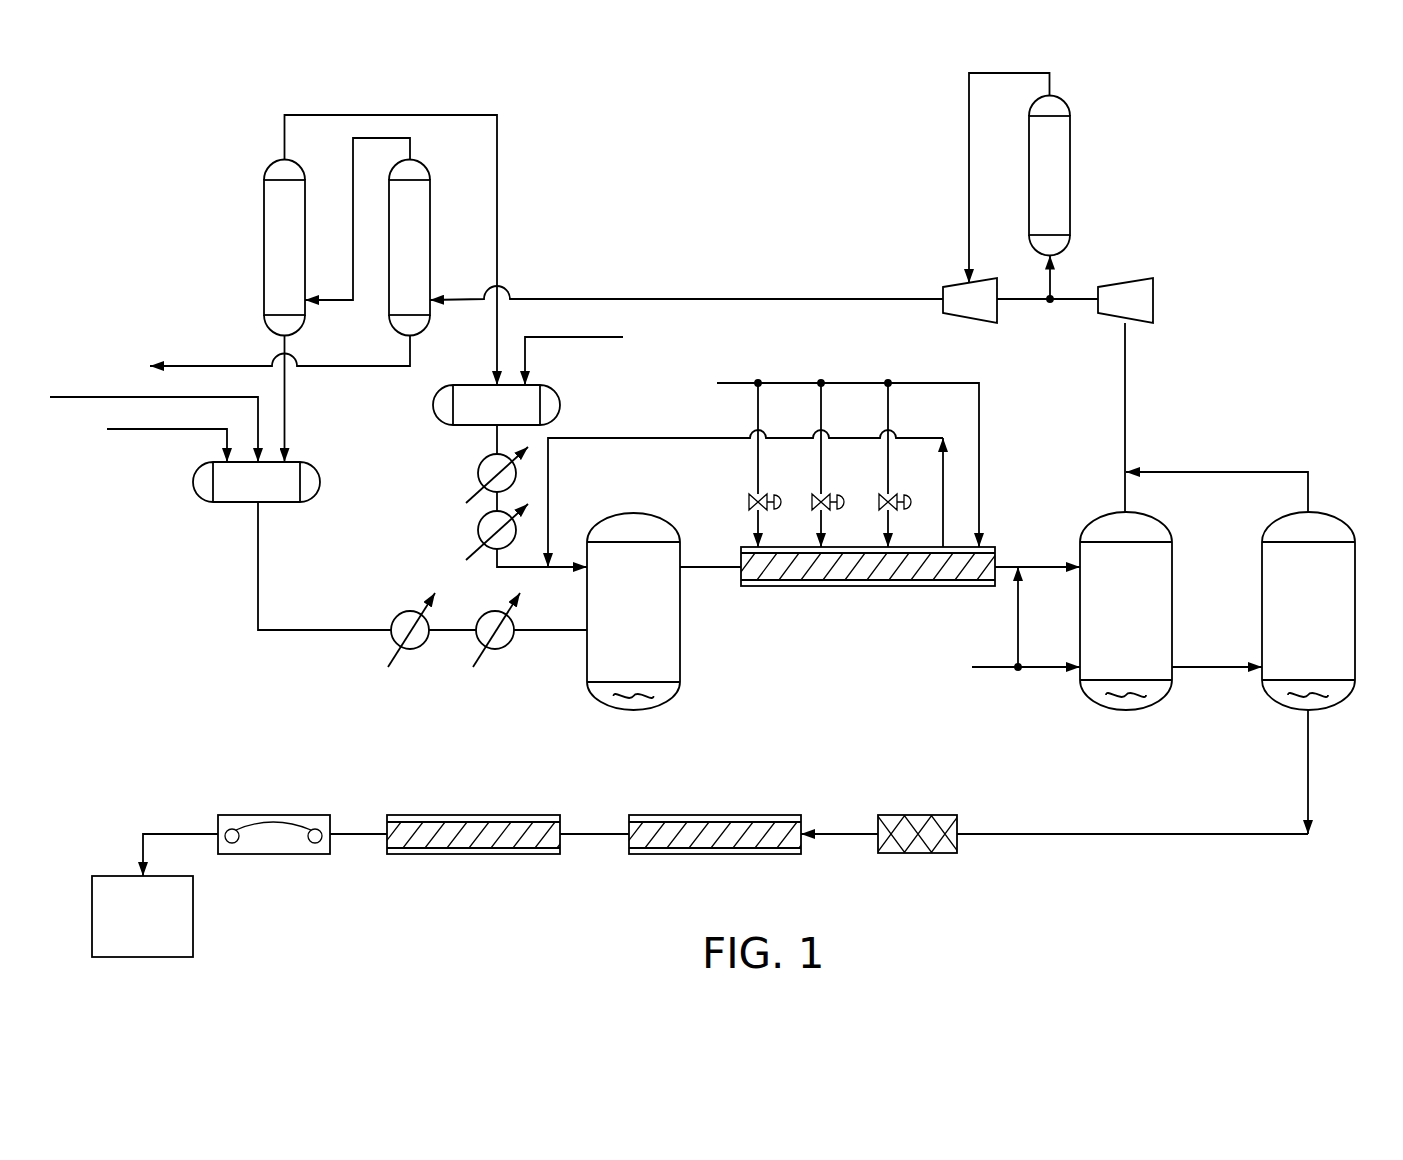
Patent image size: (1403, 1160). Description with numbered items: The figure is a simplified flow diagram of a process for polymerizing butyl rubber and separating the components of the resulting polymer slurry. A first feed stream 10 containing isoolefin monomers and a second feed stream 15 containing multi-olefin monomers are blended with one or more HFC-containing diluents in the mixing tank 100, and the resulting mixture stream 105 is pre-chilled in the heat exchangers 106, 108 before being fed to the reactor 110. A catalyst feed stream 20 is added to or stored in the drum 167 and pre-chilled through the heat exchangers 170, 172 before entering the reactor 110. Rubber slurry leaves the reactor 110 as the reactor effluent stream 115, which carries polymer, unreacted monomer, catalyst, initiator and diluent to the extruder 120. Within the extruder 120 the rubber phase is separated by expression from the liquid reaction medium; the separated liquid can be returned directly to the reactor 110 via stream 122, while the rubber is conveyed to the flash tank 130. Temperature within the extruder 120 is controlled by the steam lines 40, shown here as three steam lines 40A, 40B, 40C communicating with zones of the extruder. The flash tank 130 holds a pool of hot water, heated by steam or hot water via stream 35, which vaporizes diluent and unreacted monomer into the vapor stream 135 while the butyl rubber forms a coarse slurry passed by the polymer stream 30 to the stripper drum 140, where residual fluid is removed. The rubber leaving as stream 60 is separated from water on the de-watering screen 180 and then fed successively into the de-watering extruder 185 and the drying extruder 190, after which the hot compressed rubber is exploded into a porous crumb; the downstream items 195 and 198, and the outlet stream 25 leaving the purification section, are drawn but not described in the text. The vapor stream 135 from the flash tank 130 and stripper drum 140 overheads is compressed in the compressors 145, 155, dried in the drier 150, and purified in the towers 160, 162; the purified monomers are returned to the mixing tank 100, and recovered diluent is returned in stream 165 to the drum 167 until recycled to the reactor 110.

The first feed stream 10 is at (137, 430).
The second feed stream 15 is at (66, 398).
The catalyst feed stream 20 is at (590, 338).
The outlet stream 25 is at (202, 366).
The polymer stream 30 is at (1212, 667).
The steam and/or hot water stream 35 is at (985, 670).
The steam lines 40 is at (733, 383).
The steam line 40A is at (749, 502).
The steam line 40B is at (812, 502).
The steam line 40C is at (879, 502).
The stream 60 is at (1308, 759).
The mixing tank 100 is at (287, 503).
The mixture stream 105 is at (258, 578).
The heat exchanger 106 is at (419, 653).
The heat exchanger 108 is at (504, 653).
The reactor 110 is at (617, 616).
The reactor effluent stream 115 is at (710, 569).
The conveying system 120 is at (790, 590).
The stream 122 is at (665, 437).
The flash tank 130 is at (1106, 616).
The vapor stream 135 is at (1127, 413).
The stripper drum 140 is at (1288, 616).
The compressor 145 is at (1153, 292).
The drier 150 is at (1071, 150).
The compressor 155 is at (943, 287).
The tower 160 is at (432, 255).
The tower 162 is at (264, 213).
The stream 165 is at (498, 220).
The drum 167 is at (433, 405).
The heat exchanger 170 is at (477, 472).
The heat exchanger 172 is at (477, 540).
The de-watering screen 180 is at (913, 815).
The de-watering extruder 185 is at (750, 815).
The drying extruder 190 is at (487, 815).
The pelletizer 195 is at (277, 815).
The storage 198 is at (122, 924).